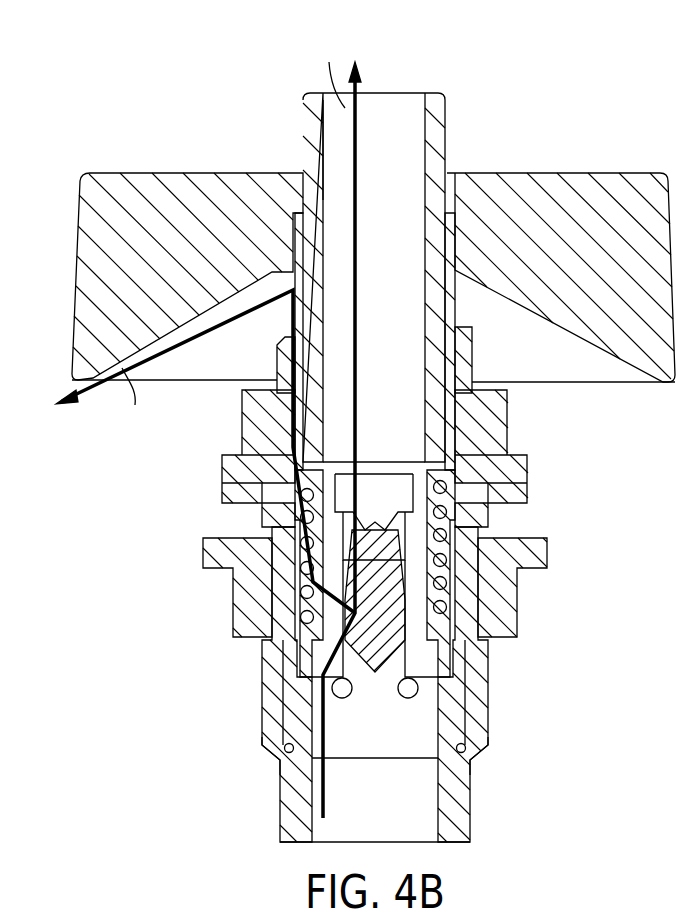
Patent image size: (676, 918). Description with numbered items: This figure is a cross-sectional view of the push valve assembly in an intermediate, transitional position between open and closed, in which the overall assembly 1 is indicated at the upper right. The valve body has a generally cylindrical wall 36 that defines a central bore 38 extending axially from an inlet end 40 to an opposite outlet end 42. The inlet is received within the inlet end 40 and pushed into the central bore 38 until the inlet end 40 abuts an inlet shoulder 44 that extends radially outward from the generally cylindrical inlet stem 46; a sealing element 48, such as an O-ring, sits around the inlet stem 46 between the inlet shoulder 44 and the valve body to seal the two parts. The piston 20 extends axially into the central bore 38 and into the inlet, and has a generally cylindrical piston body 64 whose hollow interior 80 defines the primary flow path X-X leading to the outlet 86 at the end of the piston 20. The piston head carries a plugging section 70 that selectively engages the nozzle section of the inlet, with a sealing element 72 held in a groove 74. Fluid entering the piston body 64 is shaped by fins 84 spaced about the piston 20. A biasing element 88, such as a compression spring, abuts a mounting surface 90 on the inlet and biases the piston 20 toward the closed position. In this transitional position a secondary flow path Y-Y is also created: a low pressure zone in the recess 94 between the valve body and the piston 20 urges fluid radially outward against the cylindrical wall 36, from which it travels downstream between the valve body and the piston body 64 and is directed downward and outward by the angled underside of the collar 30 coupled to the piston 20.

The valve assembly 1 is at (606, 86).
The piston 20 is at (437, 128).
The collar 30 is at (605, 178).
The generally cylindrical wall 36 is at (480, 692).
The central bore 38 is at (450, 595).
The inlet end 40 is at (490, 752).
The outlet end 42 is at (470, 329).
The inlet shoulder 44 is at (277, 766).
The inlet stem 46 is at (290, 693).
The sealing element 48 is at (464, 746).
The piston body 64 is at (448, 215).
The plugging section 70 is at (372, 715).
The sealing element 72 is at (407, 697).
The groove 74 is at (415, 650).
The interior 80 is at (405, 110).
The fins 84 is at (405, 562).
The outlet 86 is at (352, 118).
The biasing element 88 is at (440, 537).
The mounting surface 90 is at (310, 615).
The recess 94 is at (300, 548).